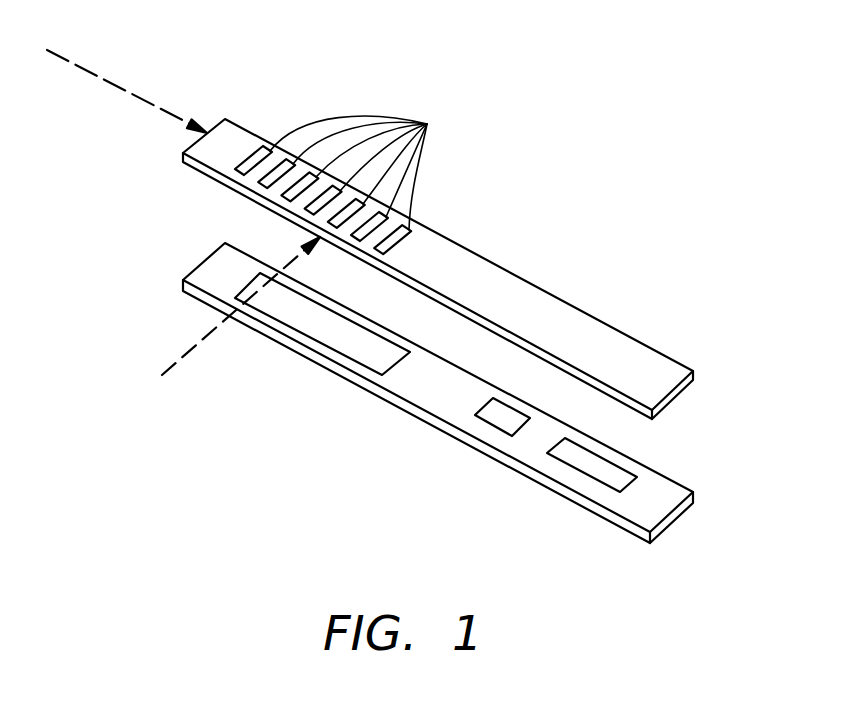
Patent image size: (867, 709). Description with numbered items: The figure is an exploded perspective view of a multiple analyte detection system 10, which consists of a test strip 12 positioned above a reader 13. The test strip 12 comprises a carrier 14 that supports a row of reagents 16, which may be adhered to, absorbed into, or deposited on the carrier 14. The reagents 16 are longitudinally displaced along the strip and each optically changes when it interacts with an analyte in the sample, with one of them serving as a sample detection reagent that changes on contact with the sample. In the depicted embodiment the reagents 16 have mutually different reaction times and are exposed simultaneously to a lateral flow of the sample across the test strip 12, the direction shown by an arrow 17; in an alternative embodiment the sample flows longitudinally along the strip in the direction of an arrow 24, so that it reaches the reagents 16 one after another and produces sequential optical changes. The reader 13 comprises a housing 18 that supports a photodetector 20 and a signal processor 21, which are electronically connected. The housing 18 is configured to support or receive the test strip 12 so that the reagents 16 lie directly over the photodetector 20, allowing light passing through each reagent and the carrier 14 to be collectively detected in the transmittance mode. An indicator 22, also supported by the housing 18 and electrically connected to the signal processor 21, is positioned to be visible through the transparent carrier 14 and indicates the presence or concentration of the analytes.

The multiple analyte detection system 10 is at (520, 118).
The test strip 12 is at (550, 287).
The reader 13 is at (652, 463).
The carrier 14 is at (437, 248).
The reagents 16 is at (353, 185).
The arrow 17 is at (164, 372).
The housing 18 is at (415, 393).
The photodetector 20 is at (320, 336).
The signal processor 21 is at (482, 420).
The indicator 22 is at (583, 478).
The arrow 24 is at (127, 87).